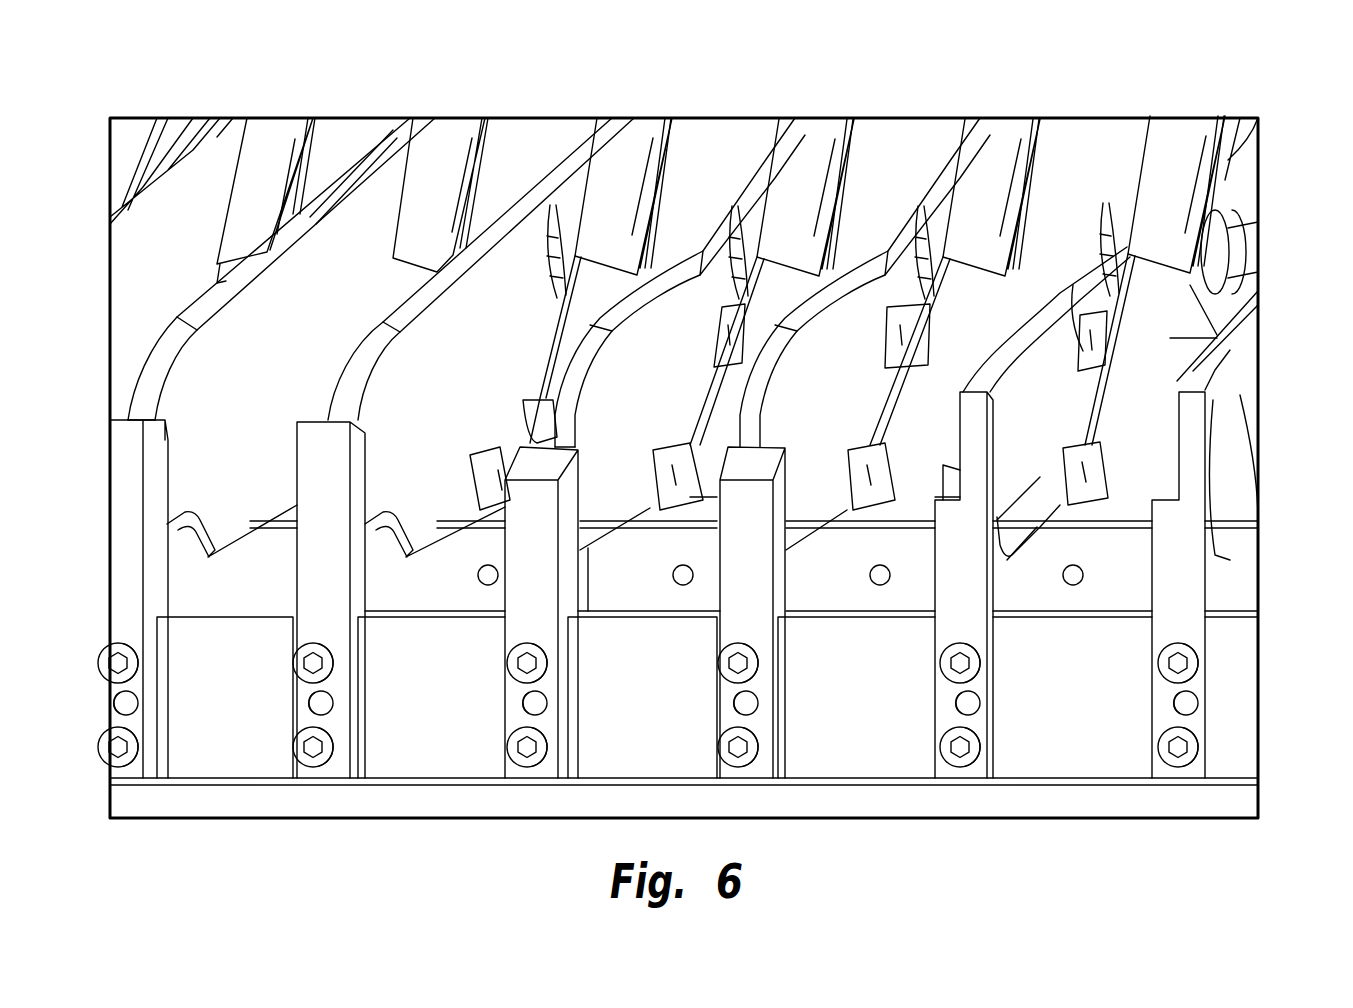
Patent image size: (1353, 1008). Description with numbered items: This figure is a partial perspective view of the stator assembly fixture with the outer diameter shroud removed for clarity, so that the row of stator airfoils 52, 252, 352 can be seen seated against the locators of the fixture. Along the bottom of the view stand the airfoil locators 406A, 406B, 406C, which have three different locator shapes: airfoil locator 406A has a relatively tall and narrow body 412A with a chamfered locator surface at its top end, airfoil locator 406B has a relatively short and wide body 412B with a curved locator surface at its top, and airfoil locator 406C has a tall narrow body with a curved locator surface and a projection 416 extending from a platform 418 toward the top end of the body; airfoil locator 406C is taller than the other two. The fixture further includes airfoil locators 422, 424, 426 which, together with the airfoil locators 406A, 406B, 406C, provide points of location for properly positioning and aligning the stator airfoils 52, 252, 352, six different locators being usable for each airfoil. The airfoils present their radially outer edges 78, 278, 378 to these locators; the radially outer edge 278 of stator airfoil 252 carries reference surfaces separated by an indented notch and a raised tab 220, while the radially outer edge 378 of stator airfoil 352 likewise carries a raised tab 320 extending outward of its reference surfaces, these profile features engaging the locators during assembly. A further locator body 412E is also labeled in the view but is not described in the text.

The stator airfoil 52 is at (389, 128).
The stator airfoil 352 is at (758, 130).
The stator airfoil 252 is at (1252, 388).
The airfoil locator 422 is at (1256, 124).
The radially outer edge 78 is at (168, 378).
The raised tab 320 is at (515, 432).
The radially outer edge 378 is at (593, 383).
The radially outer edge 278 is at (1022, 350).
The airfoil locator 424 is at (1093, 333).
The airfoil locator 426 is at (1080, 445).
The raised tab 220 is at (953, 470).
The projection 416 is at (977, 477).
The platform 418 is at (937, 492).
The body 412A is at (160, 600).
The body 412B is at (577, 587).
The mounting bracket 412E is at (993, 573).
The airfoil locator 406A is at (165, 690).
The airfoil locator 406B is at (580, 688).
The airfoil locator 406C is at (1010, 688).